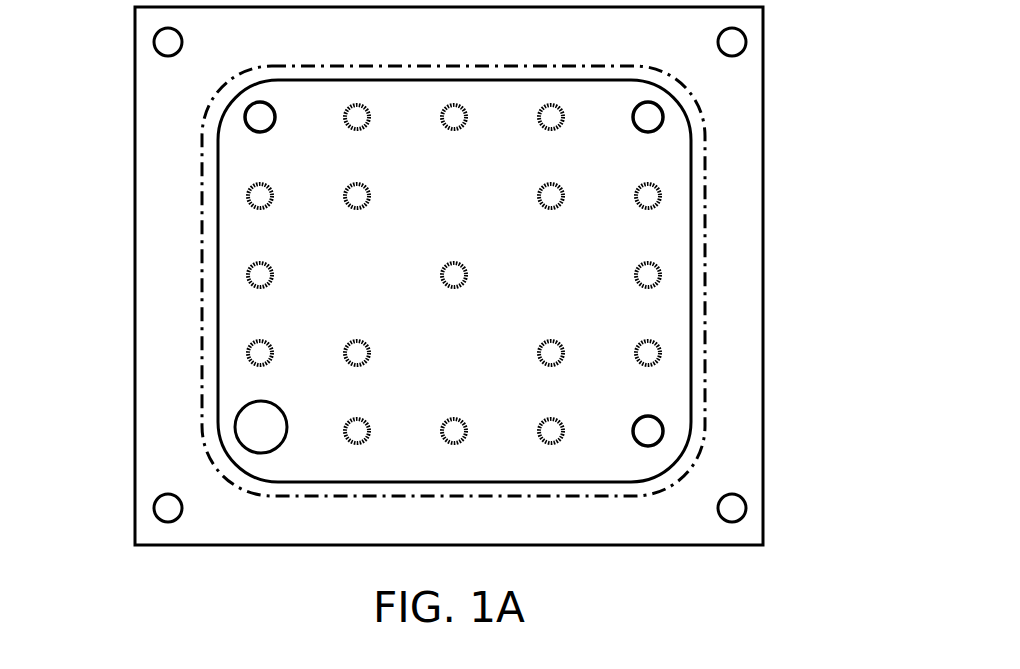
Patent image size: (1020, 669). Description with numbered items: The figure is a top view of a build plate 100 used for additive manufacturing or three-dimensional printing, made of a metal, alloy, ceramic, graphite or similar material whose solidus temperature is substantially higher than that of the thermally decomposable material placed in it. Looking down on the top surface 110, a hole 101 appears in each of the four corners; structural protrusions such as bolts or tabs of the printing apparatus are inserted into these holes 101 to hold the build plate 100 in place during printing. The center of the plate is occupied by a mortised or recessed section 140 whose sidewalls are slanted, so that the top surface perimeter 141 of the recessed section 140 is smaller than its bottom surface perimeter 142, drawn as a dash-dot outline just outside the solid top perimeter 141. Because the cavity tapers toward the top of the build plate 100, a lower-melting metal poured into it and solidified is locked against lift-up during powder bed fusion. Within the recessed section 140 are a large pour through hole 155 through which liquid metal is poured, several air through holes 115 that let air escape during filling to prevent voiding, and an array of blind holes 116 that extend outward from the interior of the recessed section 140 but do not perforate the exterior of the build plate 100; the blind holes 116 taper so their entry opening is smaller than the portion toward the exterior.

The build plate 100 is at (451, 276).
The holes 101 is at (748, 42).
The top surface 110 is at (157, 267).
The air through holes 115 is at (670, 116).
The blind holes 116 is at (673, 198).
The recessed section 140 is at (462, 277).
The top surface perimeter 141 is at (694, 376).
The bottom surface perimeter 142 is at (709, 449).
The pour through hole 155 is at (233, 427).